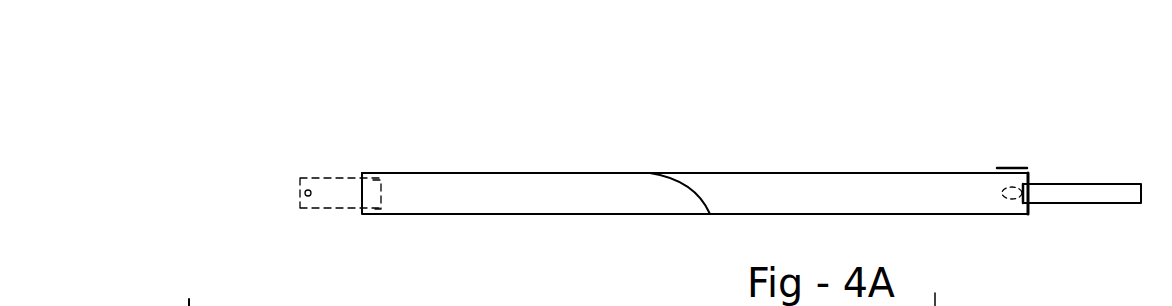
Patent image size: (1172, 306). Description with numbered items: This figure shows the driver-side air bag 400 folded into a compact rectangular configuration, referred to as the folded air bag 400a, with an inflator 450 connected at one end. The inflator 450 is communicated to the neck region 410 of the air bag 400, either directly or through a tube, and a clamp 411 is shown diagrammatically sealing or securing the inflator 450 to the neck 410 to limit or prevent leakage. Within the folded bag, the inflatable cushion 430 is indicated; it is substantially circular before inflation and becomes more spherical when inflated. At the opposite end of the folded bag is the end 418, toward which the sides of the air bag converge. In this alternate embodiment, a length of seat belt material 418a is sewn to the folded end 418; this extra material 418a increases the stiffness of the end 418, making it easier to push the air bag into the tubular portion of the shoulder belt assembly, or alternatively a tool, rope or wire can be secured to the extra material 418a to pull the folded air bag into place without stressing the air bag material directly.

The driver-side air bag 400 is at (760, 155).
The folded air bag 400a is at (534, 173).
The end of the air bag 418 is at (412, 193).
The seat belt material 418a is at (300, 183).
The inflatable cushion 430 is at (688, 187).
The neck region 410 is at (993, 175).
The clamp 411 is at (1006, 163).
The inflator 450 is at (1065, 185).